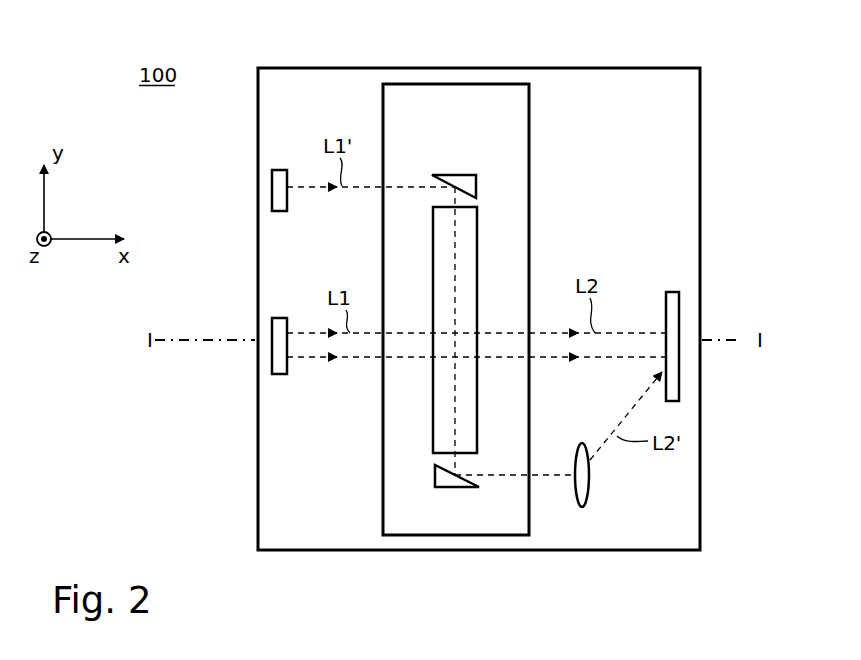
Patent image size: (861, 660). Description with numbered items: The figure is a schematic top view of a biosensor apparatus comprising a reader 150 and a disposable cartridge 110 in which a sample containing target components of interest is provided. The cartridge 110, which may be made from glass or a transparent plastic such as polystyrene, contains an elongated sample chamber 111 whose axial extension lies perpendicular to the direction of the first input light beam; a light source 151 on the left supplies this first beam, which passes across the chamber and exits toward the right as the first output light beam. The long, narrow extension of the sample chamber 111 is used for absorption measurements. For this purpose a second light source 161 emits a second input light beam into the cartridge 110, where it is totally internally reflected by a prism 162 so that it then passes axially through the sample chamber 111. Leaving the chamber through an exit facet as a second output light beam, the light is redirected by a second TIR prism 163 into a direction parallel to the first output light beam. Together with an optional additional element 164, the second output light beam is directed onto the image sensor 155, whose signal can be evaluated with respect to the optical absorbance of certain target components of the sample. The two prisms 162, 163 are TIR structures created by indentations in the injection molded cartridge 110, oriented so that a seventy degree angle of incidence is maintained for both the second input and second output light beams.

The disposable cartridge 110 is at (428, 80).
The sample chamber 111 is at (473, 237).
The reader 150 is at (606, 60).
The input lens / collimator 151 is at (272, 365).
The image sensor 155 is at (678, 292).
The second light source 161 is at (272, 188).
The prism 162 is at (462, 178).
The second TIR prism 163 is at (450, 481).
The optional additional element 164 is at (590, 487).